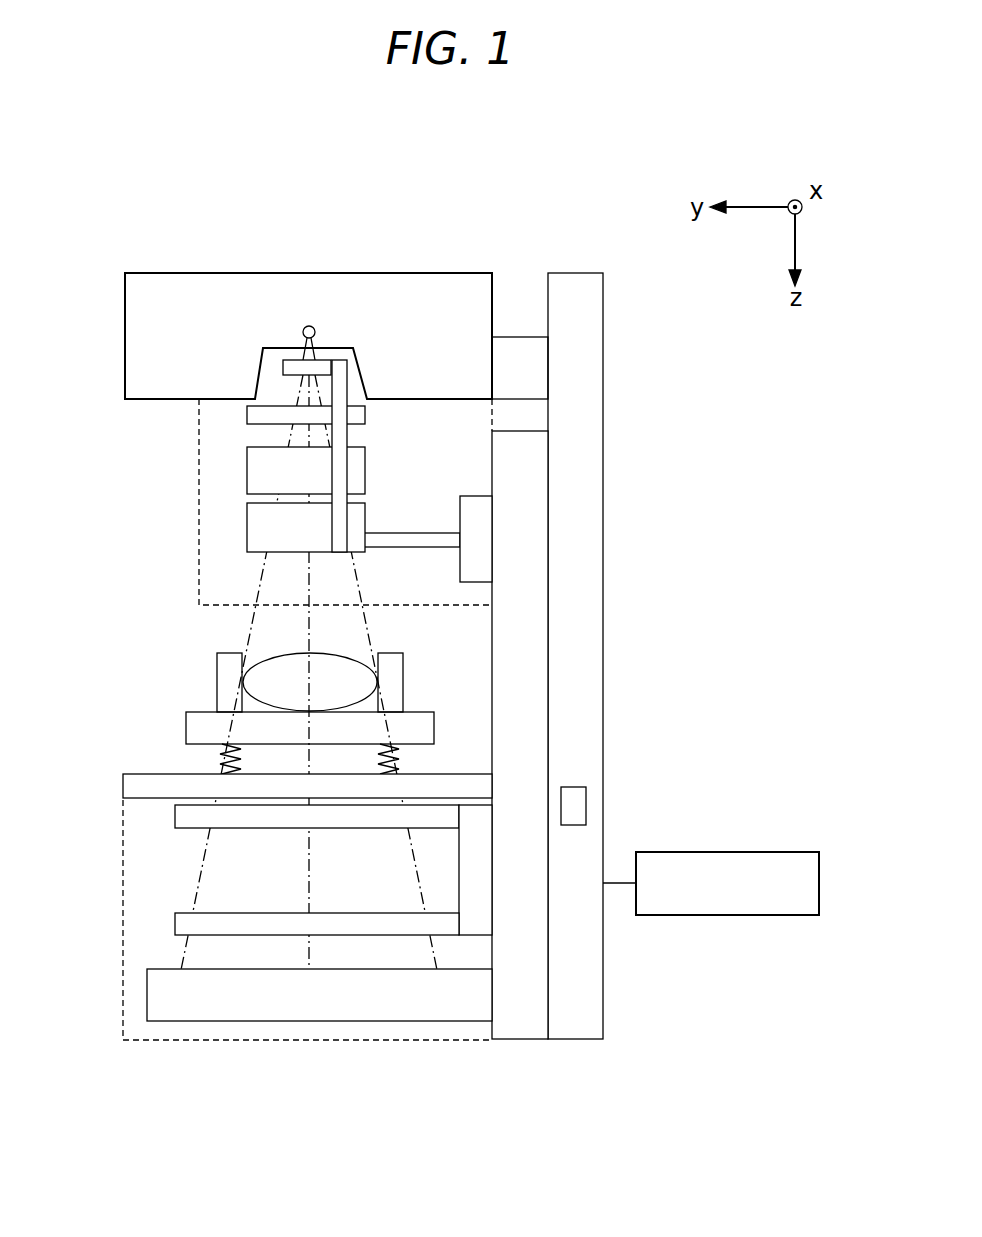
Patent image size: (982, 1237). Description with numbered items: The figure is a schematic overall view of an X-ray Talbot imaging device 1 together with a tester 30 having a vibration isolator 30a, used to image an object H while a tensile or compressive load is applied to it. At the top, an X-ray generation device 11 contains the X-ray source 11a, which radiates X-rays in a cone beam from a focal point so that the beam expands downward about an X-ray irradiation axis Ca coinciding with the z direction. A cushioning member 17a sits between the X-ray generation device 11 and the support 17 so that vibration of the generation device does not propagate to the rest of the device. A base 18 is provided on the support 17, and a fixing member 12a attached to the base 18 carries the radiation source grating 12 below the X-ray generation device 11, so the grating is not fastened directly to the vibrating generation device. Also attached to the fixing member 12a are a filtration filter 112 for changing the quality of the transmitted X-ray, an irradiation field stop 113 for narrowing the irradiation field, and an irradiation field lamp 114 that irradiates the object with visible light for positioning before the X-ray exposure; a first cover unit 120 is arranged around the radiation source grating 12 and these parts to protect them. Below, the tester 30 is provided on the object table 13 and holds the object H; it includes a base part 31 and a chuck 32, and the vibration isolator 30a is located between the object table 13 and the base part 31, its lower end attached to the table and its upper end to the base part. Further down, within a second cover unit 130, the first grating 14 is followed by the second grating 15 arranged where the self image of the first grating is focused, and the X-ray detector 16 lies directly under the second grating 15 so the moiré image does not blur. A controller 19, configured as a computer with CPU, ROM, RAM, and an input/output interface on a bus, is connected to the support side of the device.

The X-ray Talbot imaging device 1 is at (519, 190).
The X-ray generation device 11 is at (403, 273).
The X-ray source 11a is at (315, 331).
The radiation source grating 12 is at (292, 362).
The fixing member 12a is at (413, 548).
The object table 13 is at (463, 774).
The first grating 14 is at (343, 828).
The second grating 15 is at (207, 913).
The X-ray detector 16 is at (170, 969).
The support 17 is at (589, 341).
The cushioning member 17a is at (512, 337).
The base 18 is at (544, 476).
The controller 19 is at (770, 852).
The tester 30 is at (186, 700).
The vibration isolator 30a is at (392, 757).
The base part 31 is at (190, 726).
The chuck 32 is at (222, 664).
The filtration filter 112 is at (247, 412).
The irradiation field stop 113 is at (247, 466).
The irradiation field lamp 114 is at (247, 530).
The first cover unit 120 is at (199, 582).
The second cover unit 130 is at (123, 957).
The object H is at (276, 660).
The X-ray irradiation axis Ca is at (311, 635).